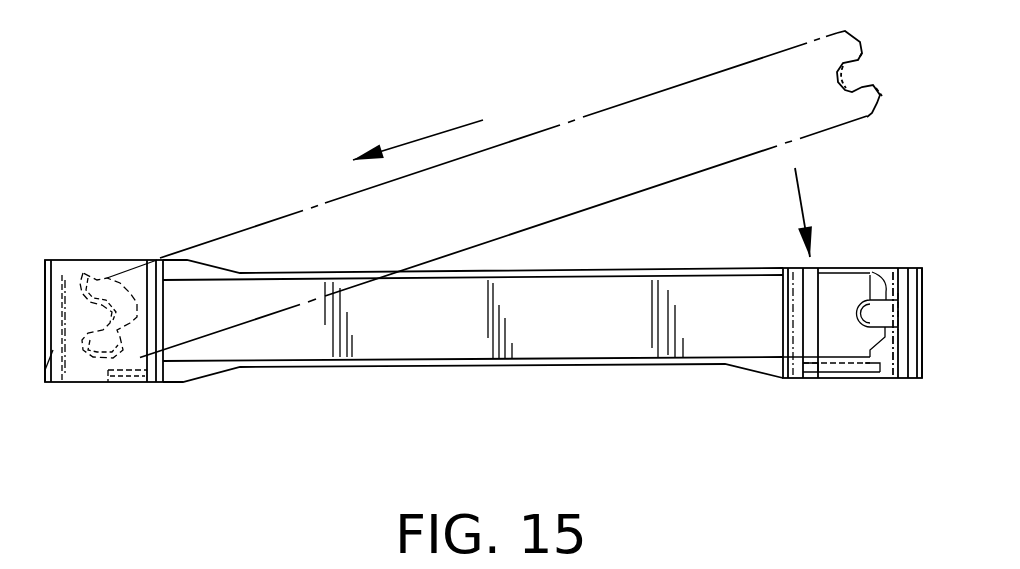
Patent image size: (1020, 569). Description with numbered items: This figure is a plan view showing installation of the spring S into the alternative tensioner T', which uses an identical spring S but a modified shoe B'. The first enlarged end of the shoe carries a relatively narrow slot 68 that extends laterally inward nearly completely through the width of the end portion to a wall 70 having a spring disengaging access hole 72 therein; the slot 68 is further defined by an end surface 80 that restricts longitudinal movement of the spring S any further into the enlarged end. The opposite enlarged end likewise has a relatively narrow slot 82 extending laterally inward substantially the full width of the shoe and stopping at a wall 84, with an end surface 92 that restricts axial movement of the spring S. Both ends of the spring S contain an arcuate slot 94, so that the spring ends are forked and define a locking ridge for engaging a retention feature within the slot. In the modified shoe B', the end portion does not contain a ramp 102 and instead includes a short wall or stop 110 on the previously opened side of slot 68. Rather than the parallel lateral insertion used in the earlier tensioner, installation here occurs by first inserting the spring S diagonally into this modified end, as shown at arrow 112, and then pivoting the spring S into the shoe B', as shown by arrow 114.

The slot 68 is at (64, 282).
The wall 70 is at (840, 370).
The spring disengaging access hole 72 is at (890, 362).
The end surface 80 is at (895, 345).
The slot 82 is at (83, 383).
The wall 84 is at (130, 383).
The end surface 92 is at (47, 383).
The arcuate slot 94 is at (137, 257).
The ramp 102 is at (867, 264).
The short wall or stop 110 is at (103, 280).
The arrow 112 is at (418, 140).
The arrow 114 is at (800, 188).
The spring S is at (607, 87).
The modified shoe B' is at (473, 359).
The tensioner T' is at (199, 119).